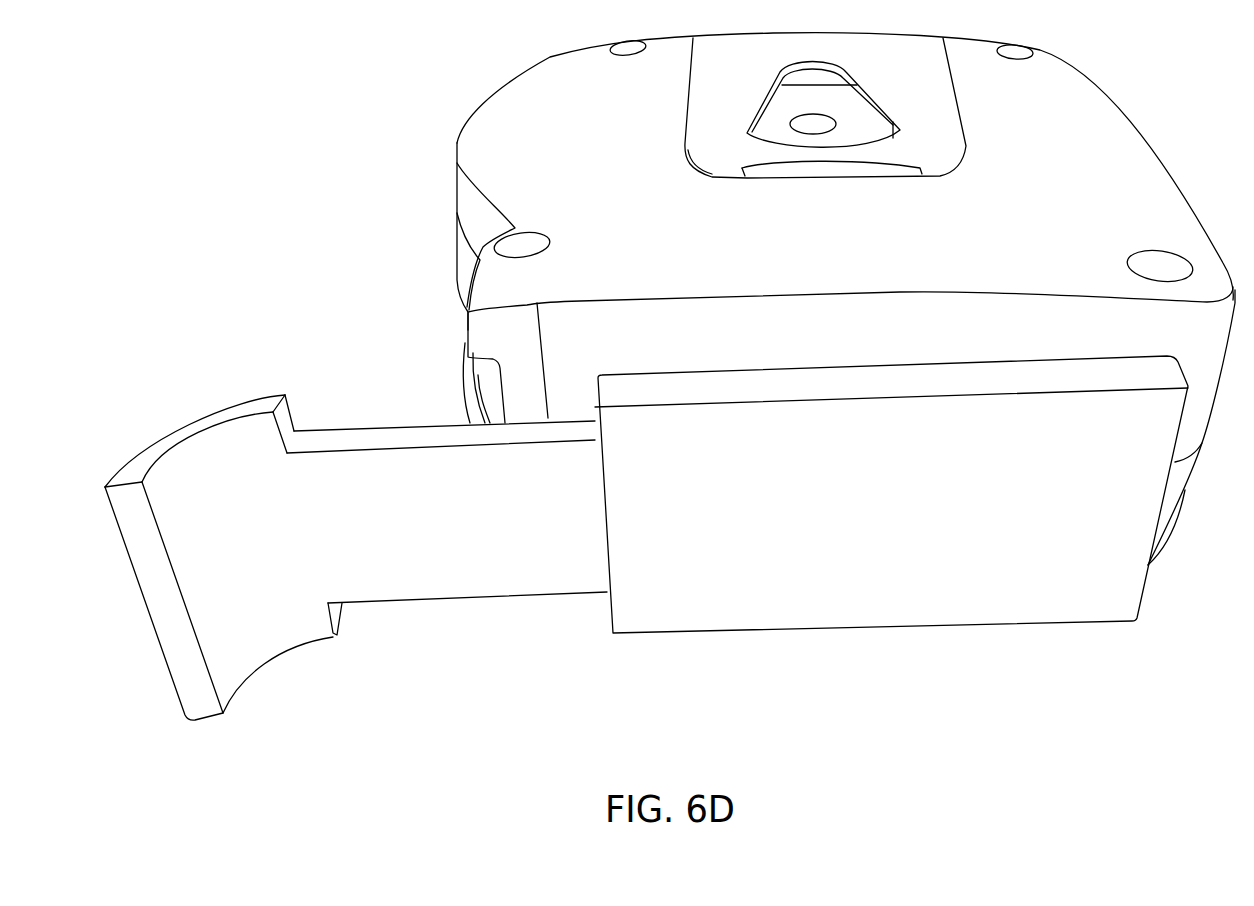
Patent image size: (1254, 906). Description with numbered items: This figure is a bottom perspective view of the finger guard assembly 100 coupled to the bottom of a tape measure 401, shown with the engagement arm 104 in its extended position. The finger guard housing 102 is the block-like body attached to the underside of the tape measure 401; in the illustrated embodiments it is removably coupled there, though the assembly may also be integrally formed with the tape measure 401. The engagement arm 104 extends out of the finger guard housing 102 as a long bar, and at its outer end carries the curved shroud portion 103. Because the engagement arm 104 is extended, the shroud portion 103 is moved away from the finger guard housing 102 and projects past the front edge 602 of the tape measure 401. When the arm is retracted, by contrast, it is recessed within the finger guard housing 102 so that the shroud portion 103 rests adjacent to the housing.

The finger guard assembly 100 is at (789, 666).
The finger guard housing 102 is at (978, 640).
The shroud portion 103 is at (257, 643).
The engagement arm 104 is at (435, 573).
The tape measure 401 is at (507, 172).
The front edge 602 is at (467, 283).